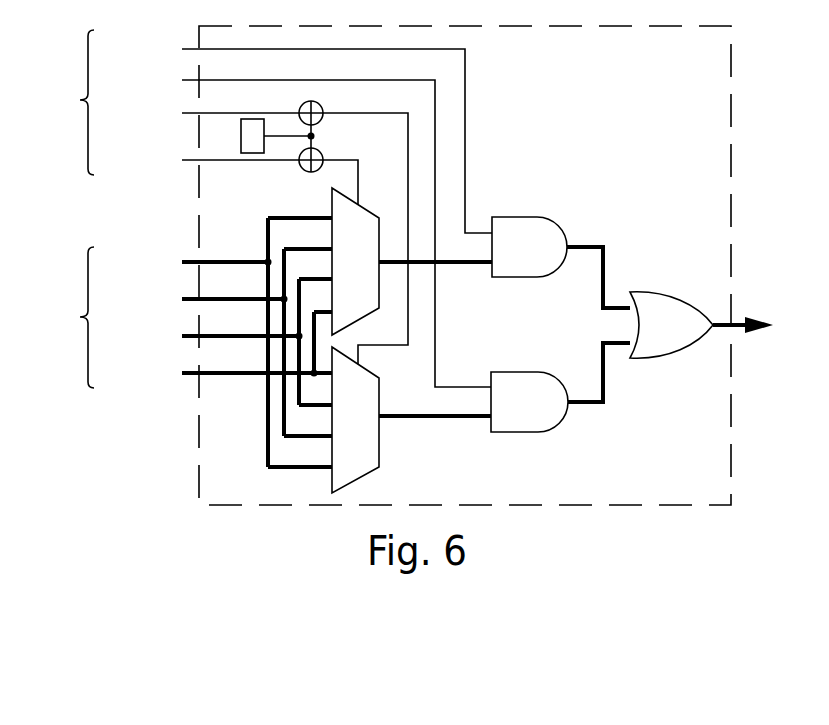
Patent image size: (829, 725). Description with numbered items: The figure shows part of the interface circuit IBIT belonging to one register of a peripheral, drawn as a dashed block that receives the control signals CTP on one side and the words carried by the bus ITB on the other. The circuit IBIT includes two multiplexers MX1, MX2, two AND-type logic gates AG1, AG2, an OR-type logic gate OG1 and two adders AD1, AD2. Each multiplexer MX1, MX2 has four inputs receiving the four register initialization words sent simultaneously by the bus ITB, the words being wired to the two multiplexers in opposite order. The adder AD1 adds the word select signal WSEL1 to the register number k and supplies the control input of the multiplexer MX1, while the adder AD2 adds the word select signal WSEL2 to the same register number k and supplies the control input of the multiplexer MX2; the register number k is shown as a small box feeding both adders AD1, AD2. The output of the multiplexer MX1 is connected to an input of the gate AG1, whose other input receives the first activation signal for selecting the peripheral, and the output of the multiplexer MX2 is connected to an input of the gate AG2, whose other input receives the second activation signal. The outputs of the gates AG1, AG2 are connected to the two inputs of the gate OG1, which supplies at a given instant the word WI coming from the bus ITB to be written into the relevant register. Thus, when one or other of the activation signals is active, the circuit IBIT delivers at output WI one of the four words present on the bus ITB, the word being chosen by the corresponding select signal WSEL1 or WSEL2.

The interface circuit IBIT is at (622, 68).
The control signals CTP is at (59, 102).
The bus ITB is at (60, 317).
The word select signal WSEL2 is at (250, 230).
The word select signal WSEL1 is at (225, 174).
The adder AD2 is at (299, 108).
The adder AD1 is at (299, 168).
The register number k is at (278, 136).
The multiplexer MX1 is at (332, 201).
The multiplexer MX2 is at (332, 481).
The AND-type logic gate AG1 is at (556, 258).
The AND-type logic gate AG2 is at (553, 413).
The OR-type logic gate OG1 is at (698, 336).
The word WI is at (764, 323).